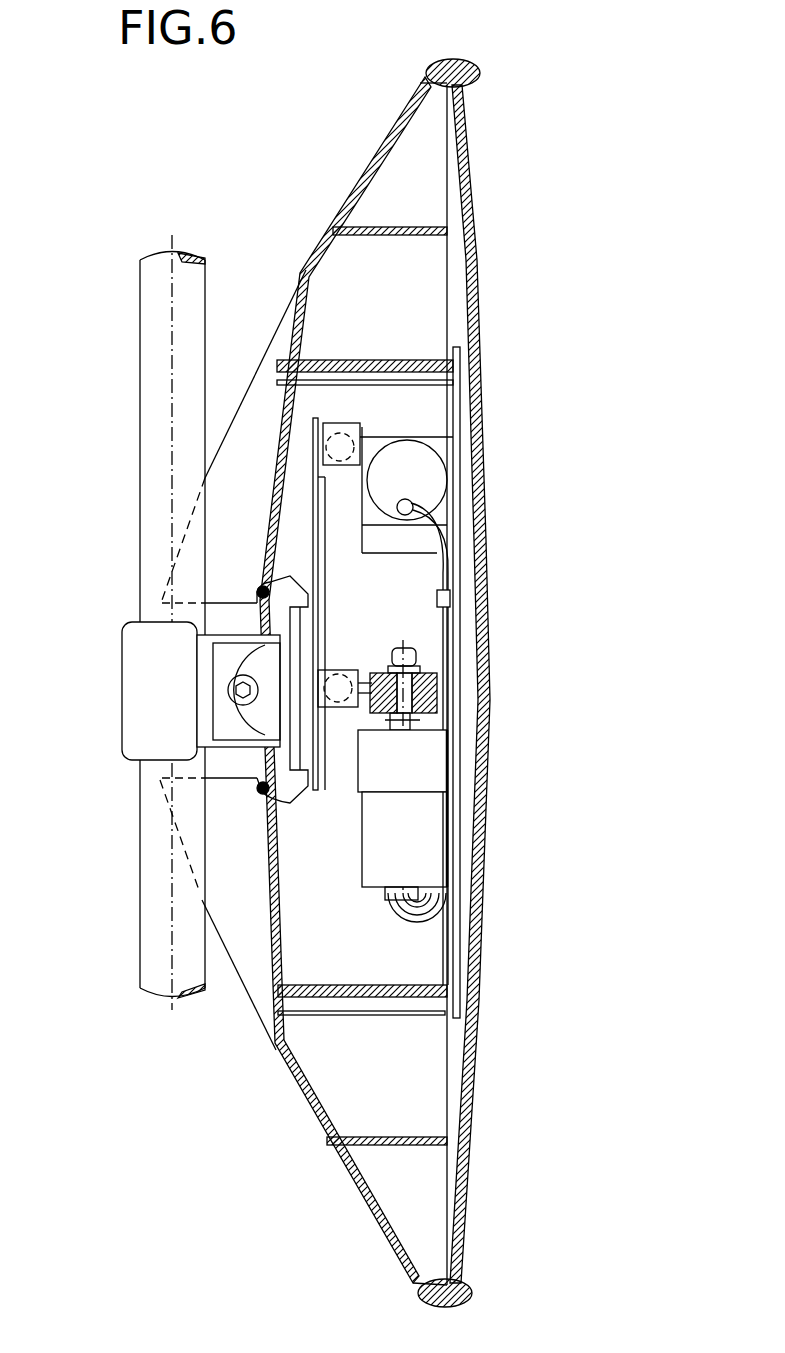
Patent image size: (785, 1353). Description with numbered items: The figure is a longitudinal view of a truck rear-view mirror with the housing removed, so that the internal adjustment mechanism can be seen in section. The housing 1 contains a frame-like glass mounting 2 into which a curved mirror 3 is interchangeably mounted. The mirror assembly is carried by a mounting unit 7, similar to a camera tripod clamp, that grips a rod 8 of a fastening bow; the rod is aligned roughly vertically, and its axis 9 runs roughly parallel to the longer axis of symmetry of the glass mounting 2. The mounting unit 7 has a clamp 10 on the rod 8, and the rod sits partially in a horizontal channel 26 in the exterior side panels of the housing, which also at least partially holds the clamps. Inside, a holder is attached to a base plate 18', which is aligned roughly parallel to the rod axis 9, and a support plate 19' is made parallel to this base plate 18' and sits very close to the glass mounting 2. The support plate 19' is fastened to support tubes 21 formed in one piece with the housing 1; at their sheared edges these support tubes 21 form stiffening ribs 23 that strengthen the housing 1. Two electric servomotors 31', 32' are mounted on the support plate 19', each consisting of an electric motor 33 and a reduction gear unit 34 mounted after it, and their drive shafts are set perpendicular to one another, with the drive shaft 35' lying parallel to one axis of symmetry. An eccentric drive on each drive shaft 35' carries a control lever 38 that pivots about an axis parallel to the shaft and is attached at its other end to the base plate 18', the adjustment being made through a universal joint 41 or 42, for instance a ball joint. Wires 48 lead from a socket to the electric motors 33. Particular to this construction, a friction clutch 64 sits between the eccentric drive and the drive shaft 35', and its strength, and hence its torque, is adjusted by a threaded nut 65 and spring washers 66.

The housing 1 is at (378, 152).
The glass mounting 2 is at (450, 60).
The mirror 3 is at (472, 186).
The mounting unit 7 is at (120, 660).
The rod 8 is at (153, 301).
The axis 9 is at (172, 355).
The clamp 10 is at (130, 638).
The base plate 18' is at (317, 631).
The support plate 19' is at (503, 682).
The support tubes 21 is at (335, 360).
The stiffening ribs 23 is at (396, 372).
The horizontal channel 26 is at (240, 430).
The electric servomotor 31' is at (508, 808).
The electric servomotor 32' is at (461, 500).
The electric motor 33 is at (425, 866).
The reduction gear unit 34 is at (433, 765).
The drive shaft 35' is at (478, 765).
The control lever 38 is at (362, 680).
The universal joint 41 is at (340, 707).
The universal joint 42 is at (340, 423).
The wire 48 is at (415, 924).
The friction clutch 64 is at (455, 696).
The threaded nut 65 is at (418, 660).
The spring washers 66 is at (430, 671).